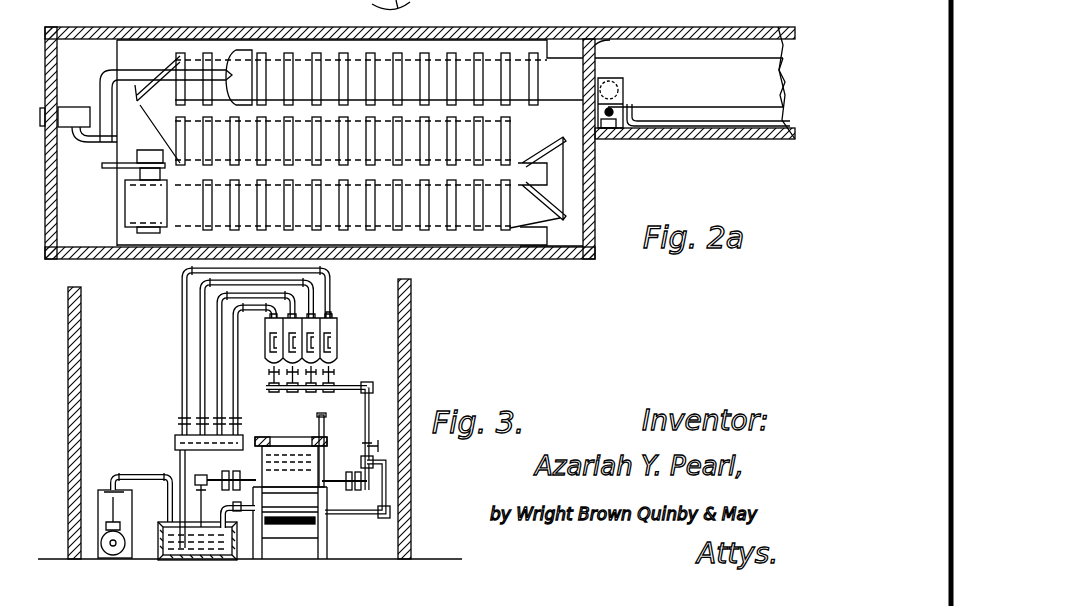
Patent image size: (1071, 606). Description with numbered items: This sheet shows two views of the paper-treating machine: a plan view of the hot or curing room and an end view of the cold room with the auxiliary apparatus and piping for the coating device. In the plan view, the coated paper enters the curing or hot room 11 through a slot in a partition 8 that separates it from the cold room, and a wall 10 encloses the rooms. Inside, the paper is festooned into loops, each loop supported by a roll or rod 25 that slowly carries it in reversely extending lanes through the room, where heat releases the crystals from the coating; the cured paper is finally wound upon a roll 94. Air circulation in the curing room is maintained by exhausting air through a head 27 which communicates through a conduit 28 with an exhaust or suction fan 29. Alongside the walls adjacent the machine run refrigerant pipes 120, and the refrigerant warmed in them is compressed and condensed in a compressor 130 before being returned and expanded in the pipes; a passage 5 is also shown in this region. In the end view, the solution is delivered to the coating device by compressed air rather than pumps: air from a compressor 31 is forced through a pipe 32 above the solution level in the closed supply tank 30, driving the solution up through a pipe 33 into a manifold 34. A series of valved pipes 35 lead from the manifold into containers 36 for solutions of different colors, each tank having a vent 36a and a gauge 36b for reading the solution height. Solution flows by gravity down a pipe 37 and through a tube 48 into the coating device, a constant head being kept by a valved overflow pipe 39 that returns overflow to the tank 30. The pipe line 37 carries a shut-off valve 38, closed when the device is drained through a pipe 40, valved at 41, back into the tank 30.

In FIG. 2A, the flue passage 5 is at (667, 65).
In FIG. 2A, the partition 8 is at (597, 55).
In FIG. 2A, the wall 10 is at (765, 45).
In FIG. 3, the wall 10 is at (98, 335).
In FIG. 2A, the curing or hot room 11 is at (568, 232).
In FIG. 2A, the roll or rod 25 is at (350, 60).
In FIG. 2A, the head 27 is at (245, 50).
In FIG. 2A, the conduit 28 is at (110, 72).
In FIG. 2A, the exhaust or suction fan 29 is at (82, 114).
In FIG. 2A, the roll 94 is at (125, 200).
In FIG. 2A, the pipes 120 is at (736, 128).
In FIG. 2A, the compressor 130 is at (612, 130).
In FIG. 3, the closed supply tank 30 is at (226, 559).
In FIG. 3, the compressor 31 is at (100, 476).
In FIG. 3, the pipe 32 is at (150, 470).
In FIG. 3, the pipe 33 is at (186, 470).
In FIG. 3, the manifold 34 is at (173, 440).
In FIG. 3, the valved pipes 35 is at (190, 348).
In FIG. 3, the container 36 is at (330, 362).
In FIG. 3, the vent 36a is at (334, 313).
In FIG. 3, the gauge 36b is at (333, 341).
In FIG. 3, the pipe 37 is at (365, 406).
In FIG. 3, the shut-off valve 38 is at (368, 447).
In FIG. 3, the valved overflow pipe 39 is at (383, 494).
In FIG. 3, the pipe 40 is at (243, 478).
In FIG. 3, the valve 41 is at (195, 495).
In FIG. 3, the tube 48 is at (340, 486).